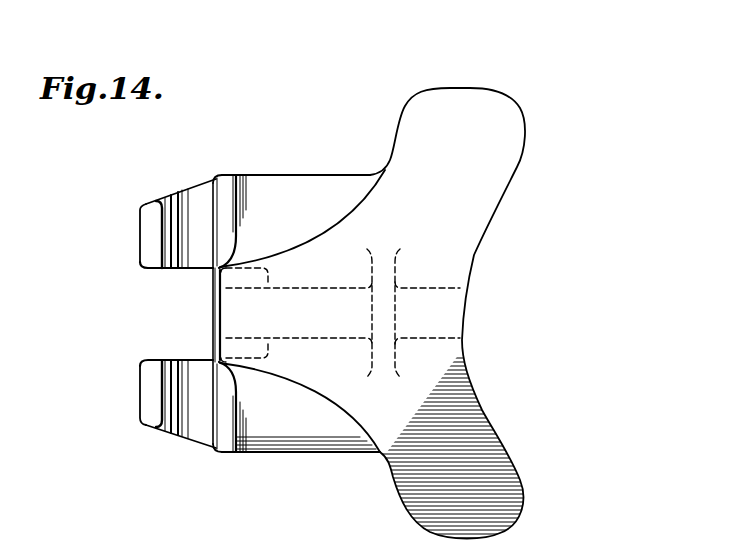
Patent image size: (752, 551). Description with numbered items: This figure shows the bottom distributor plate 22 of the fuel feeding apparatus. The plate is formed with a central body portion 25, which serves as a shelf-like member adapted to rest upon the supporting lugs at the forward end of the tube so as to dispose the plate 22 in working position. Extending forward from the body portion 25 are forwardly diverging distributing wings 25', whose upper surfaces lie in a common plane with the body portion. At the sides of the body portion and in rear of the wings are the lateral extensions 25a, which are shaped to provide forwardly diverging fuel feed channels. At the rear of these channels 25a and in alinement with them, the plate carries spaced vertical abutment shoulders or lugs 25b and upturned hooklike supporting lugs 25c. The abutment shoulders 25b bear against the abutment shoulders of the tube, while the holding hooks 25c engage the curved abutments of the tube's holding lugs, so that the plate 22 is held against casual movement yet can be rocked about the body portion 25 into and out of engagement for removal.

The bottom distributor plate 22 is at (296, 160).
The body portion 25 is at (337, 299).
The lateral extensions 25a is at (284, 469).
The abutment shoulders 25b is at (181, 457).
The hooklike supporting lugs 25c is at (148, 390).
The distributing wings 25' is at (470, 313).